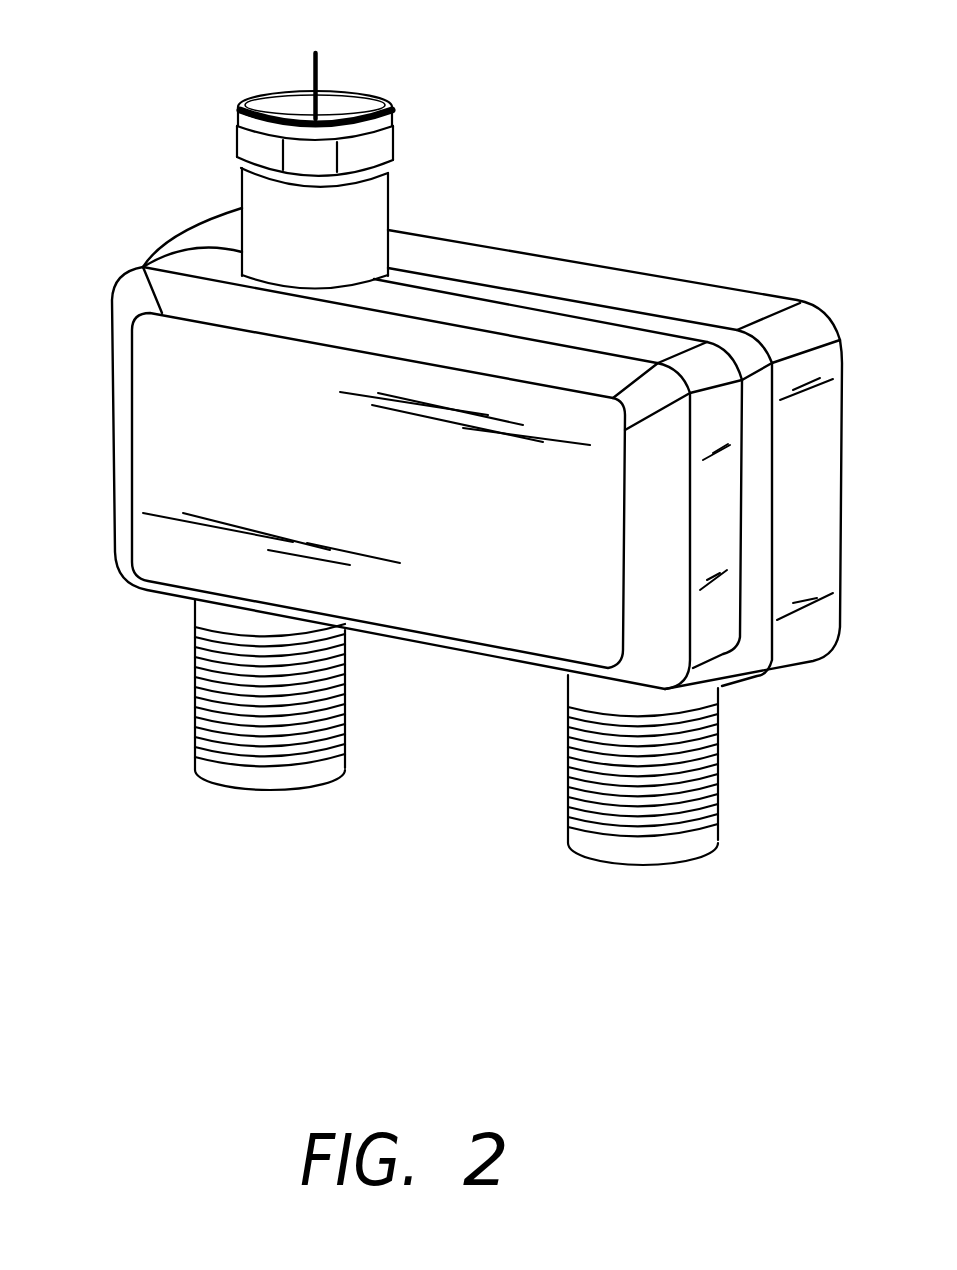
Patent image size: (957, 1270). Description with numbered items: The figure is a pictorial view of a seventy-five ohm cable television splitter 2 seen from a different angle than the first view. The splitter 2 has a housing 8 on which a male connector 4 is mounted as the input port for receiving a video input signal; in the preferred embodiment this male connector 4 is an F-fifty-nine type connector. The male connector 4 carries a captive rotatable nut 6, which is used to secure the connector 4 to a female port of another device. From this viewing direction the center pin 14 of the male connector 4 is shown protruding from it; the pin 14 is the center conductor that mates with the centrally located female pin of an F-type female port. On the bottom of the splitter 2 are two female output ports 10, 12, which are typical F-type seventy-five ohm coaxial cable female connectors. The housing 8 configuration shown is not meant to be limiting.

The splitter 2 is at (454, 443).
The male connector 4 is at (360, 155).
The captive rotatable nut 6 is at (370, 150).
The housing 8 is at (675, 298).
The female output port 10 is at (195, 718).
The female output port 12 is at (717, 773).
The center pin 14 is at (316, 72).